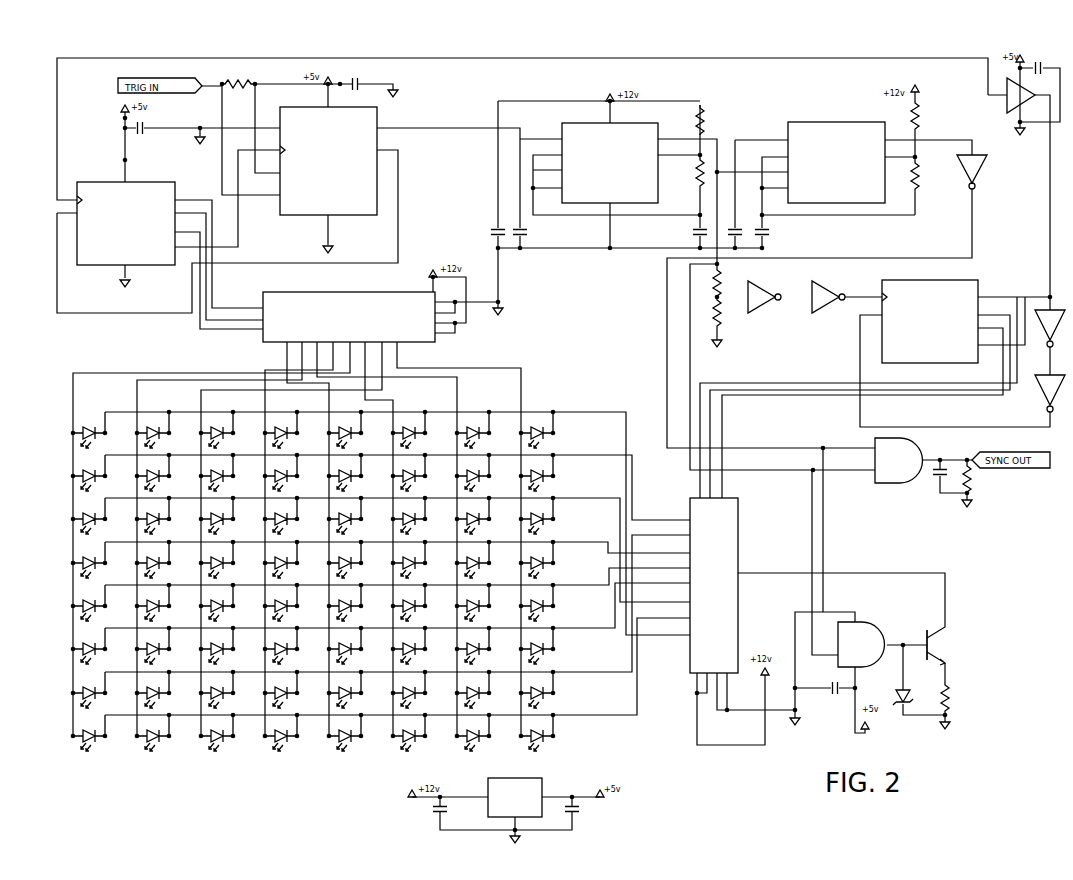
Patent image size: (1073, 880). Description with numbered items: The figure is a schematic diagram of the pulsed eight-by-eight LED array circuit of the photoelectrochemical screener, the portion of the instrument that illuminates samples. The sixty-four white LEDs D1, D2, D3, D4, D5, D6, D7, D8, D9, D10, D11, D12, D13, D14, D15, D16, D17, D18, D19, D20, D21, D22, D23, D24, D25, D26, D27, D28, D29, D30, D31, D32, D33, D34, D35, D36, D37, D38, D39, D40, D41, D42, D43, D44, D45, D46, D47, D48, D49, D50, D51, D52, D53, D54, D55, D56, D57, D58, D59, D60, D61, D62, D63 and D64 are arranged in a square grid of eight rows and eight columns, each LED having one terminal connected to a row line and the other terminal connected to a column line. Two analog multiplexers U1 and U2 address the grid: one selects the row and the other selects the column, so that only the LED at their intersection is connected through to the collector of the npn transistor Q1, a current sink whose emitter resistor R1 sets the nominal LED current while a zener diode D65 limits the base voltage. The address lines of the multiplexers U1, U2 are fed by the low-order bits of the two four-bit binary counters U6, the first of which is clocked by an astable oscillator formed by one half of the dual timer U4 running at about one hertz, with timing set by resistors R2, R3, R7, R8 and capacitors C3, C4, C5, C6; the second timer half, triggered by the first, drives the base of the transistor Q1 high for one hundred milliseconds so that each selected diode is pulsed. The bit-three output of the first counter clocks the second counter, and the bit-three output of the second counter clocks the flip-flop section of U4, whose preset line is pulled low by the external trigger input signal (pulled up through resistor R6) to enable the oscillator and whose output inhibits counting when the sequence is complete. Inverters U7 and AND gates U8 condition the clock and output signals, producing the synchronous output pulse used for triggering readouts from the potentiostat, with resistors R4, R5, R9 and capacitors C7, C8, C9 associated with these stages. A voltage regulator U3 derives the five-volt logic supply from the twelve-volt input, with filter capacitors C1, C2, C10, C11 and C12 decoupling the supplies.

The analog multiplexer U1 is at (349, 317).
The analog multiplexer U2 is at (714, 585).
The LM7805 voltage regulator U3 is at (515, 796).
The astable oscillator U4 is at (584, 169).
The 4-bit binary counter U6 is at (528, 267).
The 74LS14 hex inverter U7 is at (900, 251).
The 74LS08 AND gate U8 is at (881, 558).
The npn transistor Q1 is at (964, 645).
The resistor R1 is at (952, 697).
The resistor R2 is at (693, 120).
The resistor R3 is at (693, 172).
The resistor R4 is at (723, 282).
The resistor R5 is at (723, 312).
The resistor R6 is at (238, 78).
The resistor R7 is at (922, 175).
The resistor R8 is at (922, 115).
The resistor R9 is at (975, 478).
The capacitor C1 is at (430, 813).
The capacitor C2 is at (578, 814).
The capacitor C3 is at (693, 229).
The capacitor C4 is at (527, 229).
The capacitor C5 is at (769, 230).
The capacitor C6 is at (738, 226).
The capacitor C7 is at (828, 684).
The capacitor C8 is at (1042, 64).
The capacitor C9 is at (934, 479).
The capacitor C10 is at (491, 226).
The capacitor C11 is at (364, 80).
The capacitor C12 is at (150, 124).
The zener diode D65 is at (911, 697).
The LED D1 is at (95, 430).
The LED D2 is at (159, 430).
The LED D3 is at (223, 430).
The LED D4 is at (287, 430).
The LED D5 is at (351, 430).
The LED D6 is at (415, 430).
The LED D7 is at (479, 430).
The LED D8 is at (543, 430).
The LED D9 is at (95, 473).
The LED D10 is at (162, 473).
The LED D11 is at (226, 473).
The LED D12 is at (290, 473).
The LED D13 is at (354, 473).
The LED D14 is at (418, 473).
The LED D15 is at (482, 473).
The LED D16 is at (546, 473).
The LED D17 is at (98, 516).
The LED D18 is at (162, 516).
The LED D19 is at (226, 516).
The LED D20 is at (290, 516).
The LED D21 is at (354, 516).
The LED D22 is at (418, 516).
The LED D23 is at (482, 516).
The LED D24 is at (546, 516).
The LED D25 is at (98, 560).
The LED D26 is at (162, 560).
The LED D27 is at (226, 560).
The LED D28 is at (290, 560).
The LED D29 is at (354, 560).
The LED D30 is at (418, 560).
The LED D31 is at (482, 560).
The LED D32 is at (546, 560).
The LED D33 is at (98, 603).
The LED D34 is at (162, 603).
The LED D35 is at (226, 603).
The LED D36 is at (290, 603).
The LED D37 is at (354, 603).
The LED D38 is at (418, 603).
The LED D39 is at (482, 603).
The LED D40 is at (546, 603).
The LED D41 is at (98, 646).
The LED D42 is at (162, 646).
The LED D43 is at (226, 646).
The LED D44 is at (290, 646).
The LED D45 is at (354, 646).
The LED D46 is at (418, 646).
The LED D47 is at (482, 646).
The LED D48 is at (546, 646).
The LED D49 is at (98, 690).
The LED D50 is at (162, 690).
The LED D51 is at (226, 690).
The LED D52 is at (290, 690).
The LED D53 is at (354, 690).
The LED D54 is at (418, 690).
The LED D55 is at (482, 690).
The LED D56 is at (546, 690).
The LED D57 is at (98, 733).
The LED D58 is at (162, 733).
The LED D59 is at (226, 733).
The LED D60 is at (290, 733).
The LED D61 is at (354, 733).
The LED D62 is at (418, 733).
The LED D63 is at (482, 733).
The LED D64 is at (546, 733).